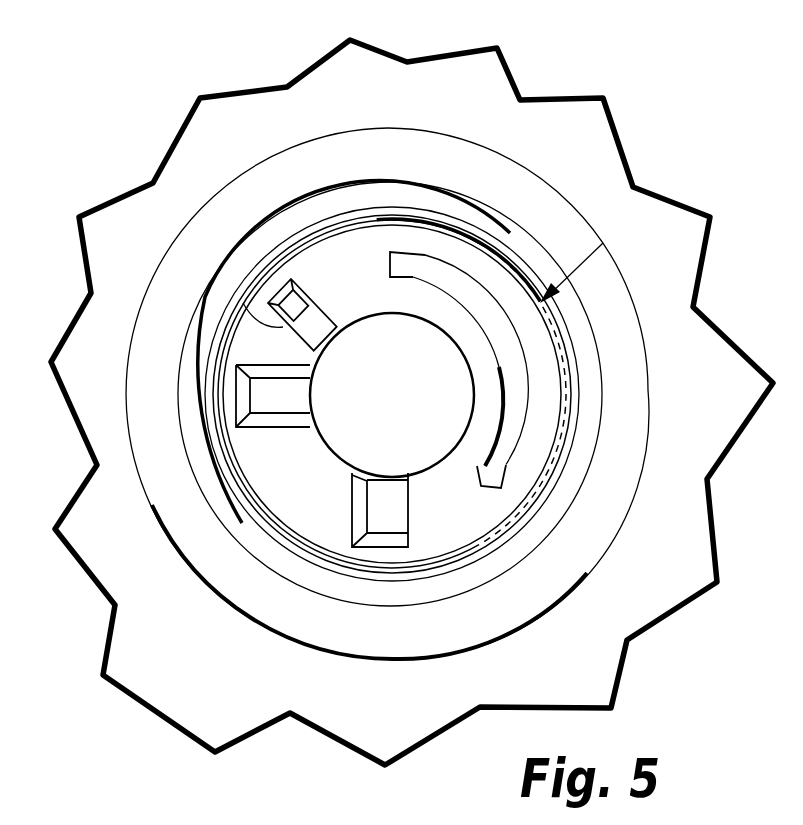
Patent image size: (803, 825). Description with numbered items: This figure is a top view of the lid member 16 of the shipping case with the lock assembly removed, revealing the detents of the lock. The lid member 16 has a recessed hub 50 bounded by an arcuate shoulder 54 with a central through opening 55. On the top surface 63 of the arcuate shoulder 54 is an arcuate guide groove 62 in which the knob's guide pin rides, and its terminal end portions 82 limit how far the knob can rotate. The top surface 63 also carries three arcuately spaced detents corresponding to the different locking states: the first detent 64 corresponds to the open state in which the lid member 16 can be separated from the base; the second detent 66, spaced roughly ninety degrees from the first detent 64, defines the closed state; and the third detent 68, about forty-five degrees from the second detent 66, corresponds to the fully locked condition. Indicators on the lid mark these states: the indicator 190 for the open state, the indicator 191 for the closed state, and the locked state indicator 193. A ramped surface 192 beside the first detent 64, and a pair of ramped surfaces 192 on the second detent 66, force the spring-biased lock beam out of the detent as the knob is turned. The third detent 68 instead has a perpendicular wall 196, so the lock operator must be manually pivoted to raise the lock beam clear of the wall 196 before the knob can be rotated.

The lid member 16 is at (690, 223).
The recessed hub 50 is at (599, 266).
The arcuate shoulder 54 is at (303, 537).
The through opening 55 is at (347, 452).
The arcuate guide groove 62 is at (510, 350).
The top surface 63 is at (468, 514).
The first detent 64 is at (387, 513).
The second detent 66 is at (265, 394).
The third detent 68 is at (300, 303).
The terminal end portions 82 is at (400, 262).
The indicator 190 is at (393, 141).
The indicator 191 is at (633, 392).
The ramped surface 192 is at (228, 342).
The locked state indicator 193 is at (586, 530).
The perpendicular wall 196 is at (243, 303).